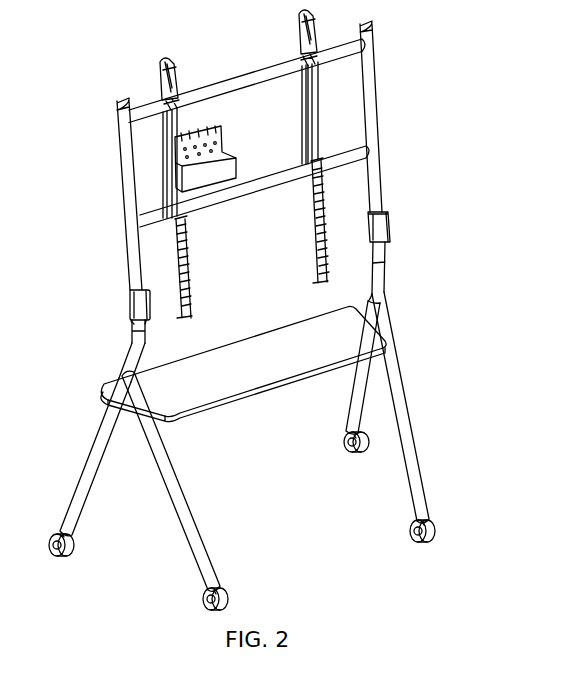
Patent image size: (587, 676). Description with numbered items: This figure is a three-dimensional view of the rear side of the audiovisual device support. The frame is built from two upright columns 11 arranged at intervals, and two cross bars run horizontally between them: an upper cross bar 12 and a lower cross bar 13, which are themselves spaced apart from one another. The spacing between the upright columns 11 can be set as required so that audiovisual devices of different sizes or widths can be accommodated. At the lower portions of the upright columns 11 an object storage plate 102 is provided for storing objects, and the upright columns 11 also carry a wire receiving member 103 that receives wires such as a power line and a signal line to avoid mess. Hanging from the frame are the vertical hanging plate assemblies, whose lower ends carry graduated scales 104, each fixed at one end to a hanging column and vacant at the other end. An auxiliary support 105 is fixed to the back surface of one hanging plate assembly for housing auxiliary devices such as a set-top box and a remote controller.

The upright columns 11 is at (377, 121).
The upper cross bar 12 is at (232, 84).
The lower cross bar 13 is at (275, 182).
The object storage plate 102 is at (252, 383).
The wire receiving member 103 is at (385, 228).
The scale 104 is at (185, 293).
The auxiliary support 105 is at (227, 155).